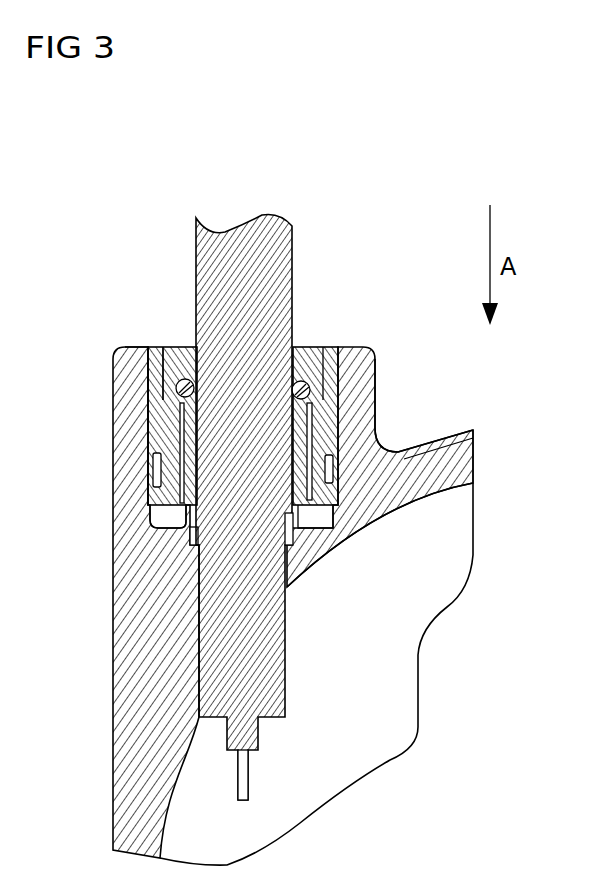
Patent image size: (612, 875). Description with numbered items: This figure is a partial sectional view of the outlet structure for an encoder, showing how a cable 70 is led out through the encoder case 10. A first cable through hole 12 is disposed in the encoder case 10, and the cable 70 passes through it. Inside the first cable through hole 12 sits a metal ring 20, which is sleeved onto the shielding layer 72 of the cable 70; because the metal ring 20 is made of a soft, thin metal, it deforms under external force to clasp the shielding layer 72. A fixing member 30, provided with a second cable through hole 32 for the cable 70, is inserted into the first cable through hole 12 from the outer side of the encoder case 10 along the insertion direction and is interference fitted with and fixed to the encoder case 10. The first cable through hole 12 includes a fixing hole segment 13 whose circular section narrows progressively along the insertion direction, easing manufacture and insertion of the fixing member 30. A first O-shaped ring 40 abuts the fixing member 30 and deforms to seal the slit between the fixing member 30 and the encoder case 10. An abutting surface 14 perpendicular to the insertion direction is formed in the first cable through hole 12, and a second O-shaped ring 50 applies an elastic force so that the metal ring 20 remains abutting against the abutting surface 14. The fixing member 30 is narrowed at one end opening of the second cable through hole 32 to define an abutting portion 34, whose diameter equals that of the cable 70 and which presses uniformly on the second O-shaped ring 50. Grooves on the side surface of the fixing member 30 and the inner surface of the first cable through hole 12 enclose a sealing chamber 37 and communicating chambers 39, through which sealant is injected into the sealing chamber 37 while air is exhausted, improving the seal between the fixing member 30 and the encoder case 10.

The encoder case 10 is at (358, 347).
The first cable through hole 12 is at (325, 512).
The fixing hole segment 13 is at (370, 412).
The abutting surface 14 is at (283, 526).
The metal ring 20 is at (176, 425).
The fixing member 30 is at (370, 375).
The second cable through hole 32 is at (305, 452).
The abutting portion 34 is at (312, 347).
The sealing chamber 37 is at (140, 387).
The communicating chamber 39 is at (148, 375).
The first O-shaped ring 40 is at (152, 470).
The second O-shaped ring 50 is at (176, 392).
The cable 70 is at (285, 660).
The shielding layer 72 is at (157, 502).